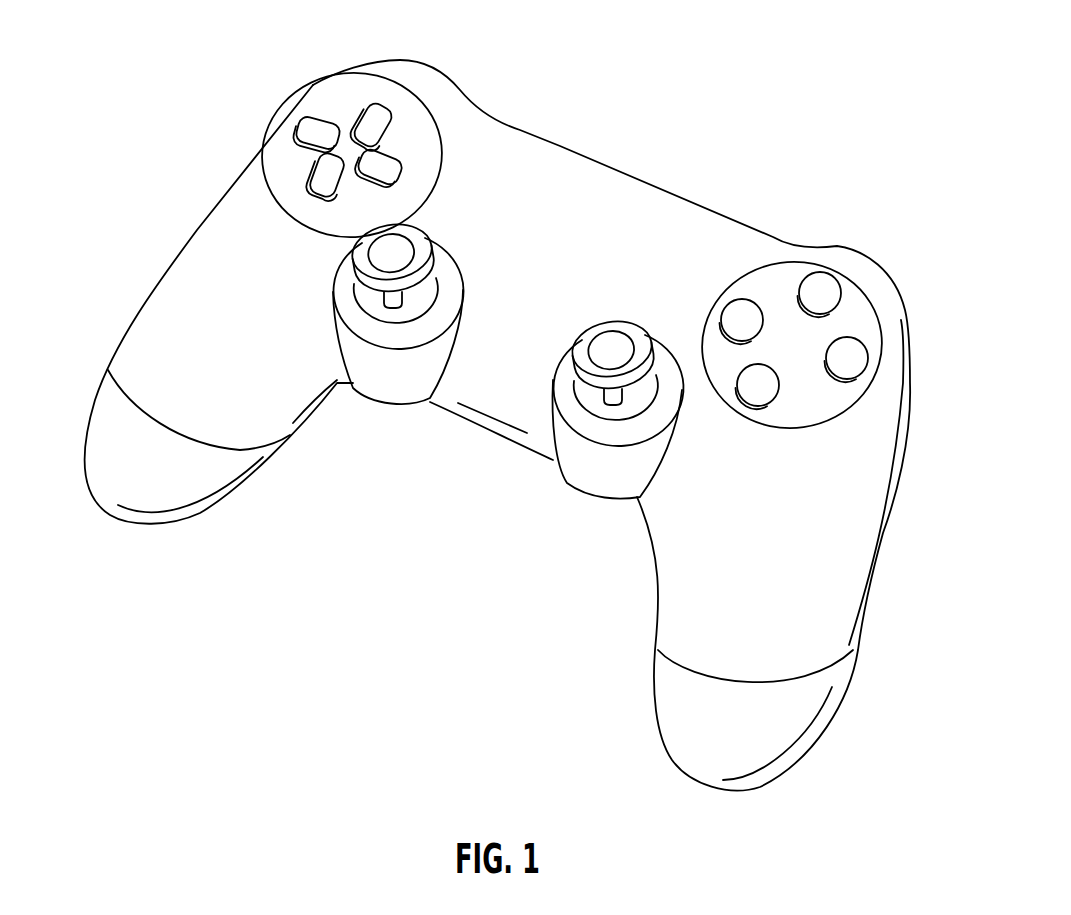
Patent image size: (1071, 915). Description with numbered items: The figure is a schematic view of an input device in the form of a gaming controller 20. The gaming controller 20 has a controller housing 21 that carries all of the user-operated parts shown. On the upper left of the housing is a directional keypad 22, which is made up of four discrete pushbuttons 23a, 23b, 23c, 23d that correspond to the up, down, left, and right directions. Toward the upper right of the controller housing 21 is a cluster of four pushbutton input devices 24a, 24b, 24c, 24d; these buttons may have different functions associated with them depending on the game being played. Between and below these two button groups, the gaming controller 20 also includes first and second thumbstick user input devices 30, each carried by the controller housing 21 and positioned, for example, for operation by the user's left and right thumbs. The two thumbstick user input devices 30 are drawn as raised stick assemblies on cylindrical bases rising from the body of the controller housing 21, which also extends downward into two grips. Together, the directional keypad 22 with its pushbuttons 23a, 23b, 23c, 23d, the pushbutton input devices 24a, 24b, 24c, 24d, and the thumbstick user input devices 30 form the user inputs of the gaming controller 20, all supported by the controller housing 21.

The gaming controller 20 is at (140, 93).
The controller housing 21 is at (193, 275).
The directional keypad 22 is at (315, 85).
The pushbutton 23a is at (377, 110).
The pushbutton 23b is at (393, 167).
The pushbutton 23c is at (322, 185).
The pushbutton 23d is at (303, 133).
The pushbutton input device 24a is at (835, 293).
The pushbutton input device 24b is at (837, 355).
The pushbutton input device 24c is at (768, 387).
The pushbutton input device 24d is at (747, 322).
The thumbstick user input device 30 is at (385, 360).